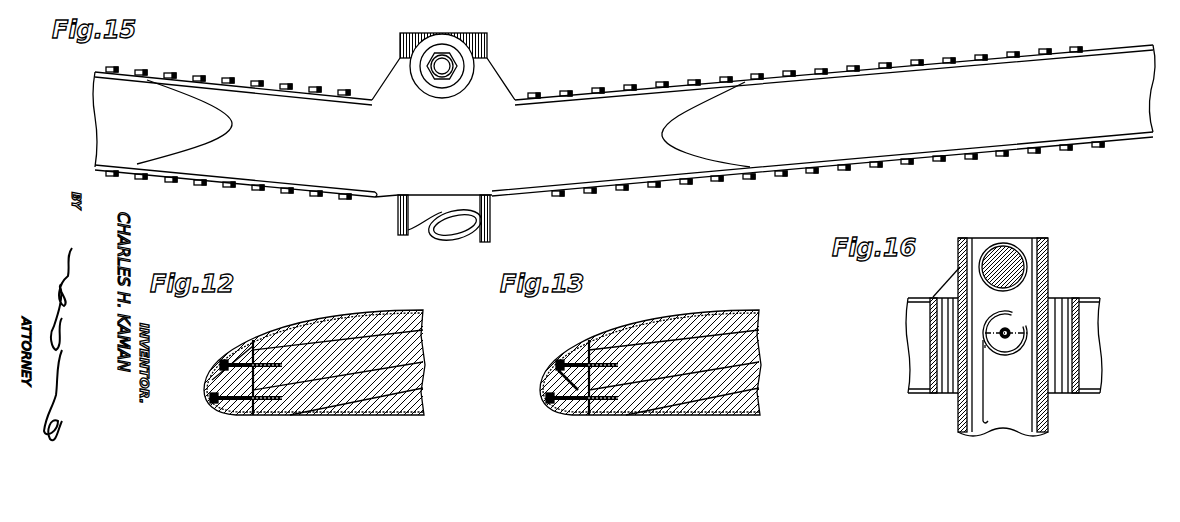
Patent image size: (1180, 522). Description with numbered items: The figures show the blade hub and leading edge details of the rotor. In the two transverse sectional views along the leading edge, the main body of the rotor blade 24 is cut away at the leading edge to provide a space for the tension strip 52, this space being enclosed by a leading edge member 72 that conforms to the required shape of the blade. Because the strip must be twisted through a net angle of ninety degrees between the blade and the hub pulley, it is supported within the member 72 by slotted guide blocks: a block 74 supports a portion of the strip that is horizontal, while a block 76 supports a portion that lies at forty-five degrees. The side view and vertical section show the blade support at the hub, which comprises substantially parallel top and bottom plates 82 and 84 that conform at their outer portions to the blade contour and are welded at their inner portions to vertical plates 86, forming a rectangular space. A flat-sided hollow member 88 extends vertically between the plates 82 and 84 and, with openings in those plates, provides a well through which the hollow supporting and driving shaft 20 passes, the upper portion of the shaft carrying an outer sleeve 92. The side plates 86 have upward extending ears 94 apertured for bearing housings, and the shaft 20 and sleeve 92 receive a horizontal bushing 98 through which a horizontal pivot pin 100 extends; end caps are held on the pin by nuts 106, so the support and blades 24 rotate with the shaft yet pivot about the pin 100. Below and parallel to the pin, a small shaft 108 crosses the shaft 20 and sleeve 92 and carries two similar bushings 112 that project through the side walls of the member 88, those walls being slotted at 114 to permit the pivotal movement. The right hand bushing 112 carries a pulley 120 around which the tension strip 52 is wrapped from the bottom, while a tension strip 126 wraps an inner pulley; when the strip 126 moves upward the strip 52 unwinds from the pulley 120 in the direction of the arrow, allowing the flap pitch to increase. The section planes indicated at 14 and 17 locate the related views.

In FIG. 15, the section line 14- 14 is at (510, 65).
In FIG. 16, the section line 14- 14 is at (985, 348).
In FIG. 15, the section line 17- 17 is at (415, 16).
In FIG. 15, the supporting and driving shaft 20 is at (470, 238).
In FIG. 16, the supporting and driving shaft 20 is at (1036, 246).
In FIG. 12, the rotor blade 24 is at (352, 312).
In FIG. 13, the rotor blade 24 is at (651, 352).
In FIG. 12, the tension element or strip 52 is at (250, 355).
In FIG. 13, the tension element or strip 52 is at (651, 359).
In FIG. 16, the tension element or strip 52 is at (931, 345).
In FIG. 12, the leading edge member 72 is at (236, 358).
In FIG. 13, the leading edge member 72 is at (582, 362).
In FIG. 12, the slotted guide block 74 is at (212, 378).
In FIG. 13, the slotted guide block 76 is at (553, 369).
In FIG. 15, the top plate 82 is at (905, 63).
In FIG. 16, the top plate 82 is at (1088, 298).
In FIG. 15, the bottom plate 84 is at (852, 166).
In FIG. 16, the bottom plate 84 is at (918, 394).
In FIG. 15, the vertical plate 86 is at (614, 104).
In FIG. 16, the flat-sided hollow member 88 is at (1066, 394).
In FIG. 15, the outer sleeve or tube 92 is at (488, 203).
In FIG. 16, the outer sleeve or tube 92 is at (1048, 252).
In FIG. 15, the upward extending ear 94 is at (506, 96).
In FIG. 16, the upward extending ear 94 is at (1050, 287).
In FIG. 16, the horizontal bushing 98 is at (996, 252).
In FIG. 15, the horizontal pivot pin 100 is at (432, 82).
In FIG. 16, the horizontal pivot pin 100 is at (1004, 250).
In FIG. 15, the nut 106 is at (457, 78).
In FIG. 16, the small shaft 108 is at (1005, 328).
In FIG. 16, the bushing 112 is at (1008, 326).
In FIG. 16, the slot 114 is at (999, 354).
In FIG. 16, the pulley 120 is at (1022, 356).
In FIG. 16, the tension strip 126 is at (987, 400).